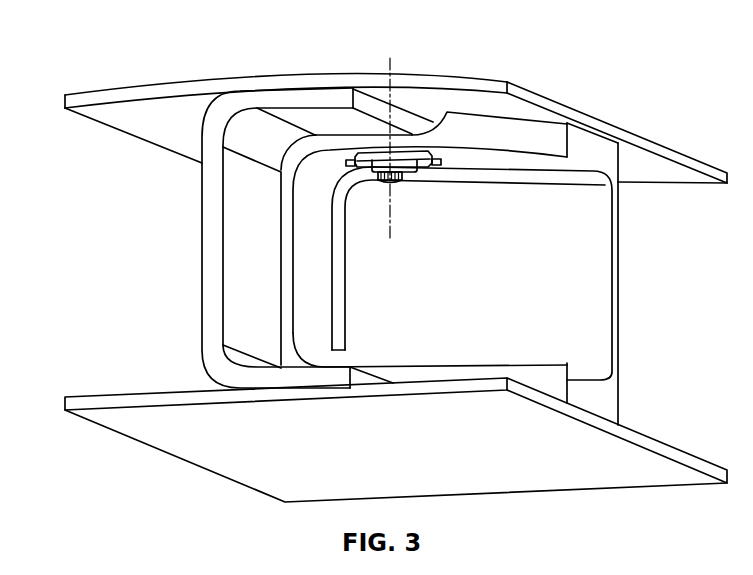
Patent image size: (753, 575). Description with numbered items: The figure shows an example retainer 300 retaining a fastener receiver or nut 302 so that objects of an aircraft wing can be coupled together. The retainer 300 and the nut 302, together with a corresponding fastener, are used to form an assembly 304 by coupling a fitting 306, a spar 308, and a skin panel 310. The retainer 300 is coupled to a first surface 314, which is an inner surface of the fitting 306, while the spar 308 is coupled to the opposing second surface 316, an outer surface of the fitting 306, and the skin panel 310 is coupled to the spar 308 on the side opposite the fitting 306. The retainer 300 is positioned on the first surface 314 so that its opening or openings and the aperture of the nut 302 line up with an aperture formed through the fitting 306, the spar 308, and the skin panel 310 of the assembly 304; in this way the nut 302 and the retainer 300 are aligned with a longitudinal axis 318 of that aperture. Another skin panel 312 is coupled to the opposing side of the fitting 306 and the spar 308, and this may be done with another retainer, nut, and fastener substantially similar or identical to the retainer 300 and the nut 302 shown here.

The retainer 300 is at (362, 180).
The nut 302 is at (414, 186).
The assembly 304 is at (580, 38).
The fitting 306 is at (562, 133).
The spar 308 is at (265, 98).
The skin panel 310 is at (103, 87).
The skin panel 312 is at (127, 392).
The first surface 314 is at (478, 157).
The second surface 316 is at (377, 133).
The longitudinal axis 318 is at (397, 228).